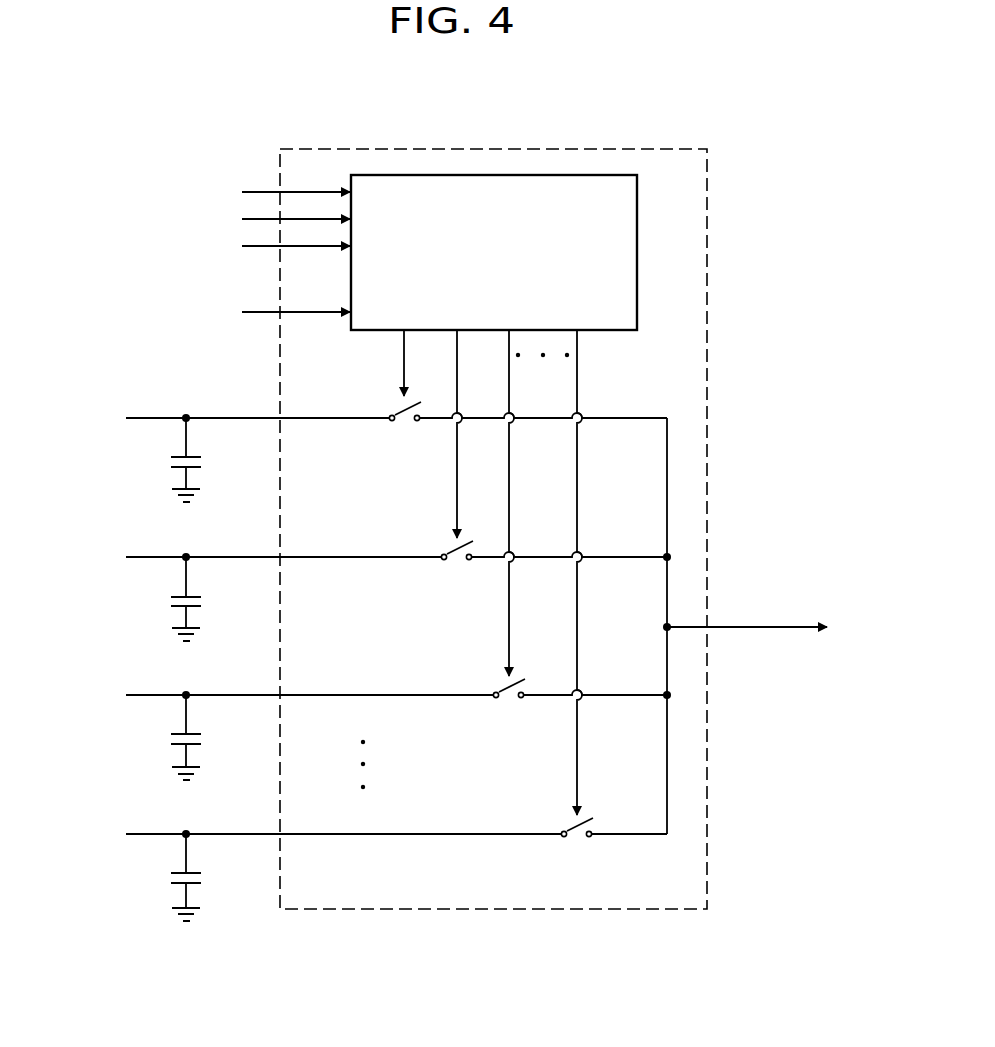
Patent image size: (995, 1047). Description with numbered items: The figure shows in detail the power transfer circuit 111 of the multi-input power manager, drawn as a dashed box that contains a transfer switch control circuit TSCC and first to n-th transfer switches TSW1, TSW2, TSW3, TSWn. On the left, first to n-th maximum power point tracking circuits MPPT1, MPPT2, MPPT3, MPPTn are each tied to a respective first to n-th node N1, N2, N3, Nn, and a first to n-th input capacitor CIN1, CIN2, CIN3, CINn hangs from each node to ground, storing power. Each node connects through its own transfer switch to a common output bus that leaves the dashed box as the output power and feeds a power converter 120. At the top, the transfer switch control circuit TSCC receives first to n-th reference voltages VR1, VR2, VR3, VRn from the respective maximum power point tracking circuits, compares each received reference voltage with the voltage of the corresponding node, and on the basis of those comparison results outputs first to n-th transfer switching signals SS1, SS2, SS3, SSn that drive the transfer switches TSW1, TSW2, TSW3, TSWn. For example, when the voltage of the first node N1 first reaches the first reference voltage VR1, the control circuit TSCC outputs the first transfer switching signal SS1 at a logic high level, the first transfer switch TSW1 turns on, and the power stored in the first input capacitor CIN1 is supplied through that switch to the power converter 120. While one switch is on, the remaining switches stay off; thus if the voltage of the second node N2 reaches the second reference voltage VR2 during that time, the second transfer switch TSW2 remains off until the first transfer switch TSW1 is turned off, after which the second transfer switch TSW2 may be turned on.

The power transfer circuit 111 is at (622, 148).
The power converter 120 is at (870, 638).
The transfer switch control circuit TSCC is at (518, 298).
The first transfer switch TSW1 is at (404, 426).
The second transfer switch TSW2 is at (456, 565).
The third transfer switch TSW3 is at (509, 704).
The n-th transfer switch TSWn is at (576, 842).
The first input capacitor CIN1 is at (212, 460).
The second input capacitor CIN2 is at (212, 599).
The third input capacitor CIN3 is at (212, 737).
The n-th input capacitor CINn is at (212, 877).
The first node N1 is at (186, 403).
The second node N2 is at (186, 542).
The third node N3 is at (186, 680).
The n-th node Nn is at (186, 819).
The first maximum power point tracking circuit MPPT1 is at (120, 432).
The second maximum power point tracking circuit MPPT2 is at (120, 571).
The third maximum power point tracking circuit MPPT3 is at (120, 709).
The n-th maximum power point tracking circuit MPPTn is at (120, 848).
The first reference voltage VR1 is at (274, 193).
The second reference voltage VR2 is at (274, 220).
The third reference voltage VR3 is at (274, 247).
The n-th reference voltage VRn is at (274, 313).
The first transfer switching signal SS1 is at (386, 363).
The second transfer switching signal SS2 is at (440, 434).
The third transfer switching signal SS3 is at (491, 503).
The n-th transfer switching signal SSn is at (598, 572).